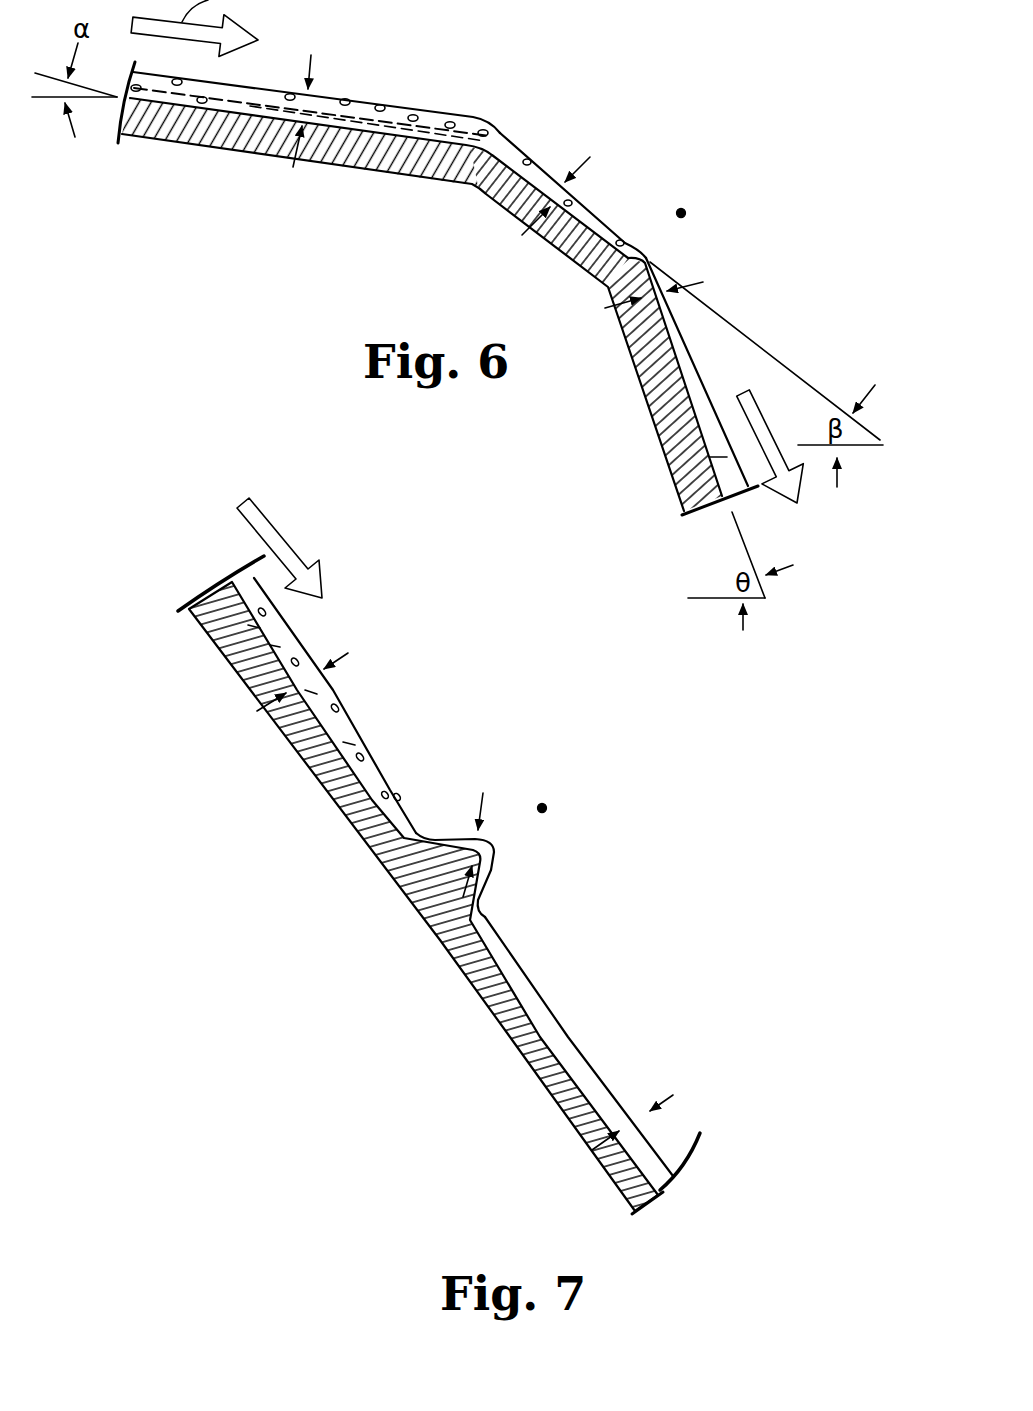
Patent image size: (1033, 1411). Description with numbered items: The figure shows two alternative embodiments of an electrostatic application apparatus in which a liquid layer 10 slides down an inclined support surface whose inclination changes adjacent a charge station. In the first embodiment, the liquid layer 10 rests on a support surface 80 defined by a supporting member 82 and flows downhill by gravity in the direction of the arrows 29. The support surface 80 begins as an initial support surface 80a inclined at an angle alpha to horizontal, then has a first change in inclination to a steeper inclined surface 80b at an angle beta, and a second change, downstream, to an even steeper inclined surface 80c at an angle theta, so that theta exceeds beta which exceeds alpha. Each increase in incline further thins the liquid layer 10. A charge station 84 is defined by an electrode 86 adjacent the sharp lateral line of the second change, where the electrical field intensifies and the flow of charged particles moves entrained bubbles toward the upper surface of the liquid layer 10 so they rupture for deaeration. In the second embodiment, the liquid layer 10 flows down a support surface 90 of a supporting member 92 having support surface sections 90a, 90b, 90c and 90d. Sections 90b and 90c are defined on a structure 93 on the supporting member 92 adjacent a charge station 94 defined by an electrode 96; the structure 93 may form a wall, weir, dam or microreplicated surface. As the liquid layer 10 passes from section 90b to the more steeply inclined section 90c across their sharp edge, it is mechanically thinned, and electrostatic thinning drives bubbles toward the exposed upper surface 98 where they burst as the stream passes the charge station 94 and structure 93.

In FIG. 6, the liquid layer 10 is at (747, 506).
In FIG. 7, the liquid layer 10 is at (685, 1187).
In FIG. 6, the arrows 29 is at (788, 483).
In FIG. 7, the arrows 29 is at (265, 557).
In FIG. 6, the support surface 80 is at (347, 109).
In FIG. 6, the initial support surface 80a is at (233, 97).
In FIG. 6, the steeper inclined surface 80b is at (527, 162).
In FIG. 6, the even steeper inclined surface 80c is at (695, 397).
In FIG. 6, the supporting member 82 is at (118, 123).
In FIG. 6, the charge station 84 is at (655, 197).
In FIG. 6, the electrode 86 is at (685, 212).
In FIG. 7, the support surface 90 is at (314, 694).
In FIG. 7, the support surface section 90a is at (335, 730).
In FIG. 7, the support surface section 90b is at (447, 838).
In FIG. 7, the support surface section 90c is at (484, 877).
In FIG. 7, the support surface section 90d is at (562, 1040).
In FIG. 7, the supporting member 92 is at (654, 1210).
In FIG. 7, the structure 93 is at (421, 834).
In FIG. 7, the charge station 94 is at (548, 720).
In FIG. 7, the electrode 96 is at (546, 807).
In FIG. 7, the exposed upper surface 98 is at (540, 1005).